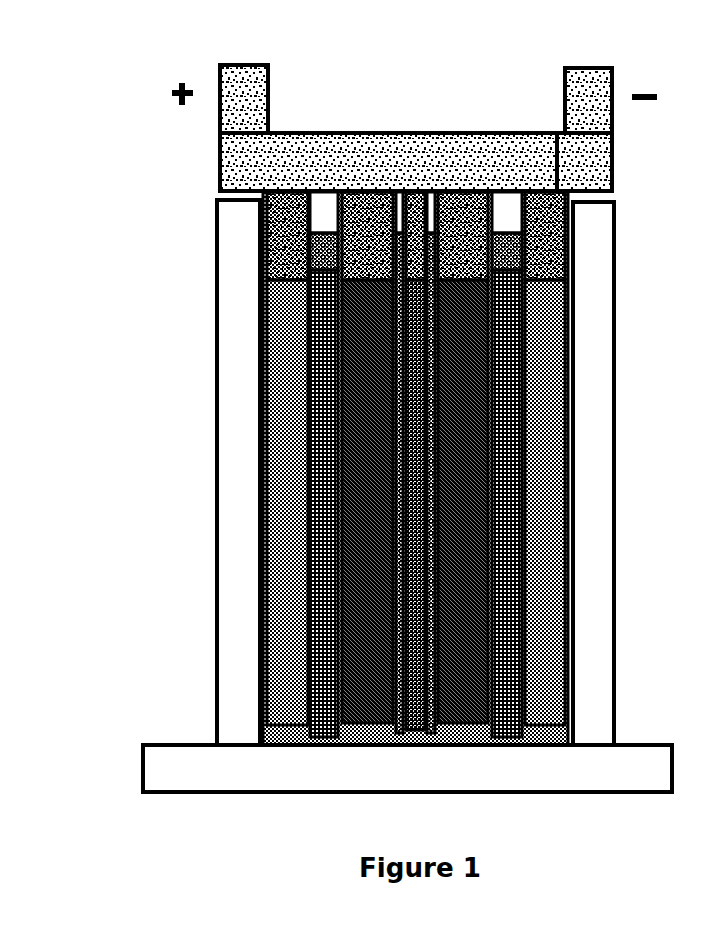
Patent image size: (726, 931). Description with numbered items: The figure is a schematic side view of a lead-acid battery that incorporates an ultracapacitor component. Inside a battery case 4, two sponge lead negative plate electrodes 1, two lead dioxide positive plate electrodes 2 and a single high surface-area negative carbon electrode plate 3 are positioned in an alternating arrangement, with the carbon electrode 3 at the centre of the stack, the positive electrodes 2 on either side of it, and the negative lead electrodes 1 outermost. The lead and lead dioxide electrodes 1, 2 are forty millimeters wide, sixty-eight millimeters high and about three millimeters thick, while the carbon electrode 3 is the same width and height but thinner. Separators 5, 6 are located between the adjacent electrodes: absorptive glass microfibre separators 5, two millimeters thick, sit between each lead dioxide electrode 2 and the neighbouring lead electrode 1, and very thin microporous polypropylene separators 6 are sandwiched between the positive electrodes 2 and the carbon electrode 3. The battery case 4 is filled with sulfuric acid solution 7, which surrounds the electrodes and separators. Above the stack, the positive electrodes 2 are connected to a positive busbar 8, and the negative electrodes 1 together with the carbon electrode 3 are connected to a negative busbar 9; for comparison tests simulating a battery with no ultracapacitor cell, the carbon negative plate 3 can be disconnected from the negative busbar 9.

The sponge lead negative plate electrode 1 is at (295, 442).
The lead dioxide positive plate electrode 2 is at (458, 355).
The high surface-area negative carbon electrode plate 3 is at (424, 480).
The battery case 4 is at (596, 693).
The absorptive glass microfibre separator 5 is at (503, 632).
The microporous polypropylene separator 6 is at (406, 567).
The sulfuric acid solution 7 is at (274, 732).
The positive busbar 8 is at (323, 131).
The negative busbar 9 is at (475, 157).